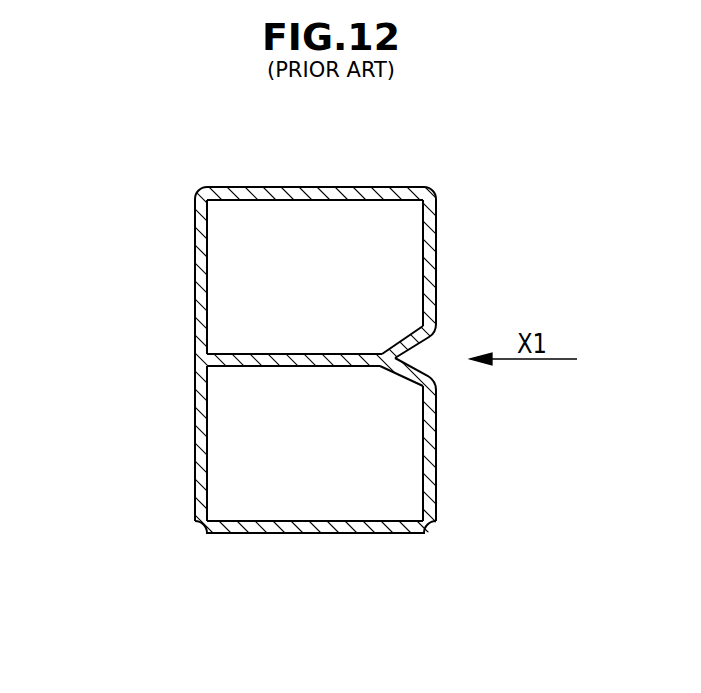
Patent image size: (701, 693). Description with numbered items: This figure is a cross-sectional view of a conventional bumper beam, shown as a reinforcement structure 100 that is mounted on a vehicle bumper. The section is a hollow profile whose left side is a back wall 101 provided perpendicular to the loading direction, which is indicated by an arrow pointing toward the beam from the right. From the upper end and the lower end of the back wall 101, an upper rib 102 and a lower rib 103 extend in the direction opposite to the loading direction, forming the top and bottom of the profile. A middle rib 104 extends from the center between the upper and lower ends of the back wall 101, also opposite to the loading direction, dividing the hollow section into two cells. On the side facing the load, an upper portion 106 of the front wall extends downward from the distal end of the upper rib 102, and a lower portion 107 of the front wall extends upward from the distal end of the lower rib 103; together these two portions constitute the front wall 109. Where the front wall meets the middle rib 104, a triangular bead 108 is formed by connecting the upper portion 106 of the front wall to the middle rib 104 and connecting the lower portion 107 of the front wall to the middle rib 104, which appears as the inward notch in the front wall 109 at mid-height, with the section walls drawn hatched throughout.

The reinforcement structure 100 is at (153, 189).
The back wall 101 is at (195, 258).
The upper rib 102 is at (302, 187).
The lower rib 103 is at (307, 533).
The middle rib 104 is at (306, 354).
The upper portion of the front wall 106 is at (437, 255).
The lower portion of the front wall 107 is at (437, 462).
The triangular bead 108 is at (428, 370).
The front wall 109 is at (443, 207).